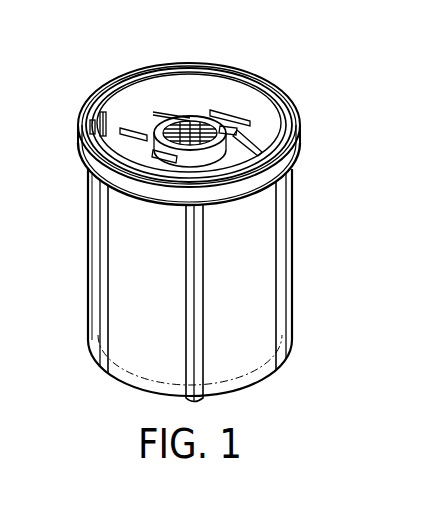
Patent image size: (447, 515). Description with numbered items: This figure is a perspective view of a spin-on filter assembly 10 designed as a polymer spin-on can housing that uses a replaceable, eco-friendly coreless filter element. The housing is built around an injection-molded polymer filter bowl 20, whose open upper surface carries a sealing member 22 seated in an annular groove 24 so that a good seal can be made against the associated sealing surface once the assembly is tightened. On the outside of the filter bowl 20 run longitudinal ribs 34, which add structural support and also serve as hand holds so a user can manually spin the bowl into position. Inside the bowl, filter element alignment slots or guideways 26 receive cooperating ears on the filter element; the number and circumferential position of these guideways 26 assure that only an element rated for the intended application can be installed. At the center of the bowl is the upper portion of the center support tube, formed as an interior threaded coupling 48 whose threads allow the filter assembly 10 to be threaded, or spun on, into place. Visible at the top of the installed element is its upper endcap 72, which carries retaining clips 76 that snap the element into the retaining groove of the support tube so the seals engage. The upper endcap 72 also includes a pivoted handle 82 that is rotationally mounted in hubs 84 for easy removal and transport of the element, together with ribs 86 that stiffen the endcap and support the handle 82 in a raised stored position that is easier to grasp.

The spin-on filter assembly 10 is at (352, 43).
The filter bowl 20 is at (238, 384).
The sealing member 22 is at (302, 140).
The annular groove 24 is at (303, 168).
The filter element alignment slots, grooves or guideways 26 is at (106, 120).
The longitudinal ribs 34 is at (88, 312).
The interior threaded coupling 48 is at (185, 118).
The upper endcap 72 is at (200, 110).
The retaining clips 76 is at (92, 128).
The pivoted handle 82 is at (270, 128).
The hubs 84 is at (242, 116).
The ribs 86 is at (128, 128).